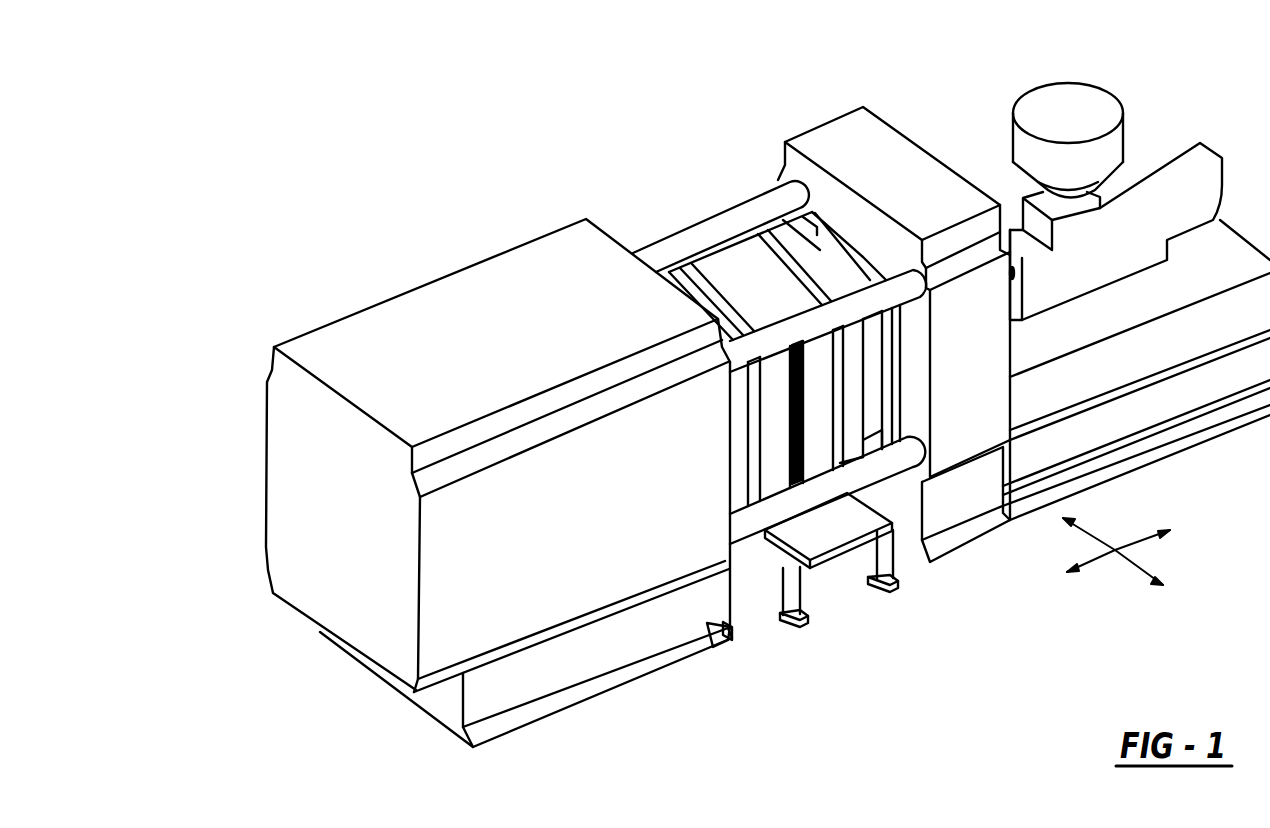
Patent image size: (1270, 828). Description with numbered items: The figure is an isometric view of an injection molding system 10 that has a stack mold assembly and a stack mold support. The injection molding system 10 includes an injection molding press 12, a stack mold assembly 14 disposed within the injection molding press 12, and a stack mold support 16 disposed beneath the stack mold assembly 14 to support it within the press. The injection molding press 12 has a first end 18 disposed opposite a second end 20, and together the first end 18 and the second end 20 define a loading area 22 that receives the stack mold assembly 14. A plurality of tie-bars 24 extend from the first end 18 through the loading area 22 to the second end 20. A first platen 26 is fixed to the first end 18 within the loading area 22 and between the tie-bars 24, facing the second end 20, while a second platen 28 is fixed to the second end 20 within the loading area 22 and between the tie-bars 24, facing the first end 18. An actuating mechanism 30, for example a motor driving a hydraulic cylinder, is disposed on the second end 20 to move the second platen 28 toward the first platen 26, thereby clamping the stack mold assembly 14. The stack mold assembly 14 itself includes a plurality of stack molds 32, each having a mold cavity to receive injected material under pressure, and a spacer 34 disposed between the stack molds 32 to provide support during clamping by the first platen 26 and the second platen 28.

The injection molding system 10 is at (490, 119).
The injection molding press 12 is at (577, 265).
The stack mold assembly 14 is at (727, 283).
The stack mold support 16 is at (840, 597).
The first end 18 is at (403, 325).
The second end 20 is at (883, 143).
The loading area 22 is at (707, 140).
The tie-bars 24 is at (887, 297).
The first platen 26 is at (735, 480).
The second platen 28 is at (810, 235).
The actuating mechanism 30 is at (1137, 137).
The stack molds 32 is at (822, 440).
The spacer 34 is at (793, 448).